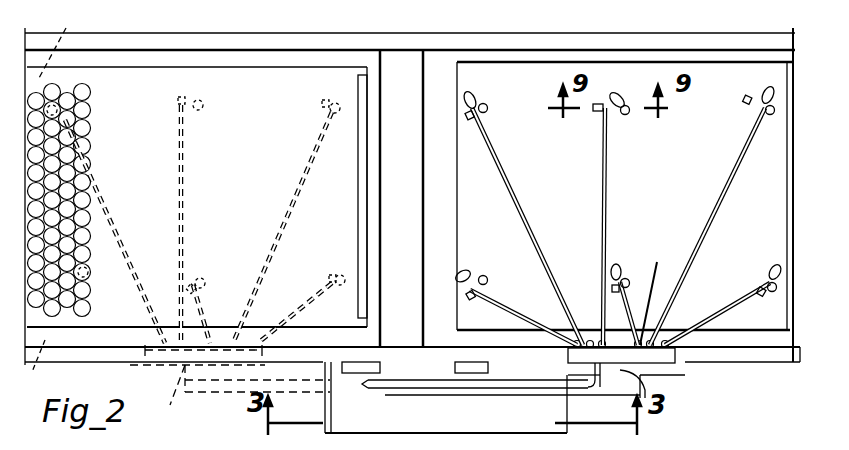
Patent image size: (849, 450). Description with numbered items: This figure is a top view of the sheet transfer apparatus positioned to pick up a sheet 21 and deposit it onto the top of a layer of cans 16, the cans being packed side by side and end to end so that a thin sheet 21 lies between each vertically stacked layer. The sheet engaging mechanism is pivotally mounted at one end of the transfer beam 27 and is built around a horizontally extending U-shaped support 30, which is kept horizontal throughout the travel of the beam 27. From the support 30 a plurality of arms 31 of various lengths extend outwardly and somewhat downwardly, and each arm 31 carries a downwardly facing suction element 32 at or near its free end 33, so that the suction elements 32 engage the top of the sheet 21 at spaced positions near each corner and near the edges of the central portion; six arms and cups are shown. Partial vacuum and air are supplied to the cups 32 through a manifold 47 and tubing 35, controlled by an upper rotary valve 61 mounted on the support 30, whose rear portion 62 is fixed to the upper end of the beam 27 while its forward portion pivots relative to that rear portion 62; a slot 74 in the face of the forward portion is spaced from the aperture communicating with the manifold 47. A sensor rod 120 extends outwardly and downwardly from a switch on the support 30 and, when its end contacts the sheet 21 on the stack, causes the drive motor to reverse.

The cans 16 is at (88, 112).
The sheet 21 is at (218, 67).
The transfer beam 27 is at (219, 391).
The U-shaped support 30 is at (150, 362).
The arms 31 is at (170, 197).
The suction element 32 is at (208, 106).
The free end 33 is at (66, 30).
The tubing 35 is at (476, 92).
The manifold 47 is at (660, 368).
The upper rotary valve 61 is at (230, 386).
The rear portion 62 is at (655, 392).
The slot 74 is at (508, 386).
The sensor rod 120 is at (658, 262).